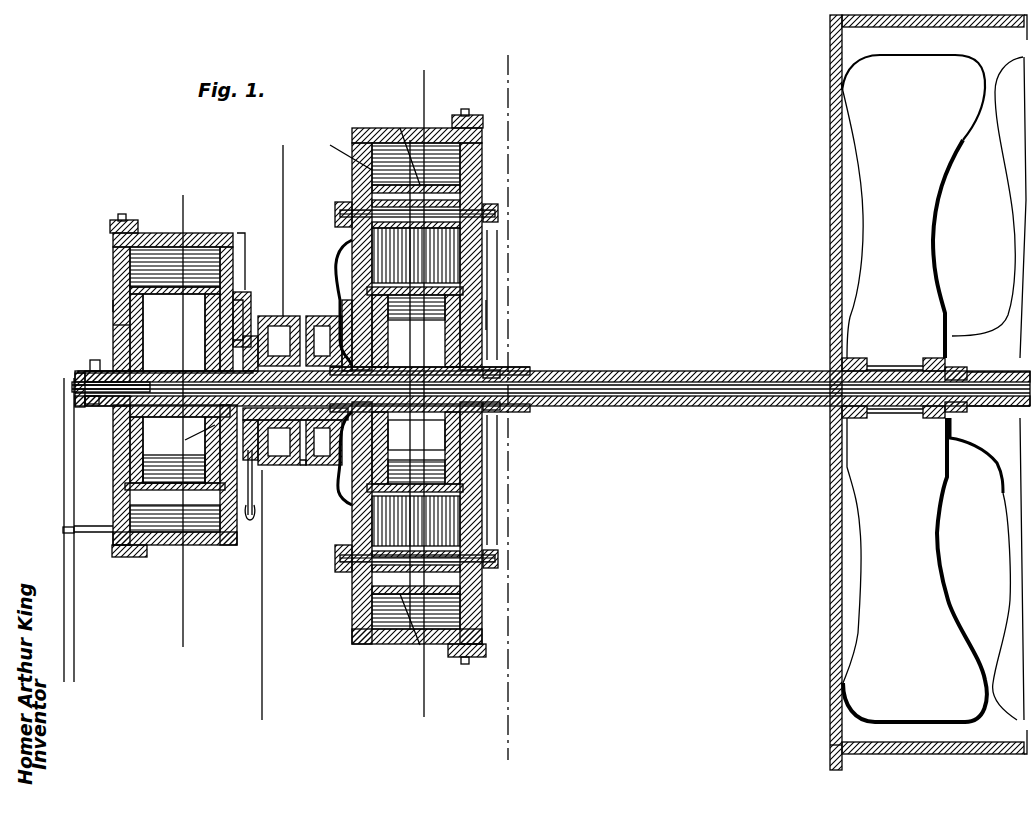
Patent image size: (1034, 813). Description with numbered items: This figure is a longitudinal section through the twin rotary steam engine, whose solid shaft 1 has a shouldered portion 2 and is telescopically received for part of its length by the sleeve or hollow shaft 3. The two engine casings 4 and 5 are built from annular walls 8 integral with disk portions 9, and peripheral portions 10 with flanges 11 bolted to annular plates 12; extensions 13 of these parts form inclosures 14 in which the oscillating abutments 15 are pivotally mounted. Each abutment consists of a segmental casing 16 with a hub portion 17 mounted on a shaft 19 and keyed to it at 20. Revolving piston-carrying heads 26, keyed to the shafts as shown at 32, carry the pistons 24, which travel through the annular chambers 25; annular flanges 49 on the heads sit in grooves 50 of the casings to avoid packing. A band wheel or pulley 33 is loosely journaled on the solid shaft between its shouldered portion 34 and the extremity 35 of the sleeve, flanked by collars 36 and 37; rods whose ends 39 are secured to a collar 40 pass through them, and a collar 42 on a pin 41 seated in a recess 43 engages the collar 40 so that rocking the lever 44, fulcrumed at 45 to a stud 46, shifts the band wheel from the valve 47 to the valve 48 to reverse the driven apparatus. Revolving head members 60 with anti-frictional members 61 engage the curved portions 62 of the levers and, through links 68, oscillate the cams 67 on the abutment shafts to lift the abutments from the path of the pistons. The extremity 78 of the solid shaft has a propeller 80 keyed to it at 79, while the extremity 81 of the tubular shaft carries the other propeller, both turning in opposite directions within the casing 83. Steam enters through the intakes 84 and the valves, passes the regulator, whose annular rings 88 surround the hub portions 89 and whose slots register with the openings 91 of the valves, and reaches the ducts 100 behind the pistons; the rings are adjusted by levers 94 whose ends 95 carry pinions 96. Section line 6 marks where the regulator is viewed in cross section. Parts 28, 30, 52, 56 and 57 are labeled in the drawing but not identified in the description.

The solid shaft 1 is at (566, 410).
The shouldered portion 2 is at (186, 423).
The sleeve or hollow shaft 3 is at (724, 408).
The casing of the engine 4 is at (507, 407).
The casing of the engine 5 is at (419, 403).
The section line 6— 6 is at (222, 546).
The annular walls 8 is at (420, 646).
The disk portions 9 is at (248, 250).
The peripheral portions 10 is at (128, 222).
The flanges 11 is at (118, 218).
The annular plates 12 is at (113, 268).
The extensions 13 is at (483, 148).
The casings or inclosures 14 is at (483, 160).
The oscillating abutments 15 is at (417, 255).
The segmental shaped casings 16 is at (528, 252).
The hub portion 17 is at (400, 128).
The shafts 19 is at (340, 202).
The key 20 is at (416, 611).
The pistons 24 is at (418, 521).
The chambers 25 is at (585, 262).
The piston-carrying heads 26 is at (205, 240).
The rotor winding 28 is at (174, 461).
The rotor core 30 is at (424, 452).
The key 32 is at (500, 355).
The band wheel or pulley 33 is at (258, 336).
The shouldered portion 34 is at (258, 450).
The extremity of the sleeve 35 is at (302, 466).
The collar 36 is at (342, 315).
The collar 37 is at (305, 450).
The ends of the rods 39 is at (72, 388).
The collar 40 is at (85, 372).
The pin 41 is at (85, 402).
The collar 42 is at (92, 362).
The recess 43 is at (75, 386).
The lever 44 is at (64, 495).
The fulcrum 45 is at (63, 532).
The stud 46 is at (92, 526).
The valve 47 is at (416, 331).
The valve 48 is at (245, 292).
The annular flanges 49 is at (113, 296).
The annular recesses or grooves 50 is at (113, 322).
The rotor core 52 is at (180, 444).
The rotor 56 is at (175, 332).
The rotor bar 57 is at (200, 450).
The revolving head members 60 is at (551, 458).
The anti-frictional members 61 is at (498, 300).
The curved portions of the levers 62 is at (922, 182).
The cams 67 is at (498, 210).
The links 68 is at (498, 228).
The extremity of the solid shaft 78 is at (988, 390).
The key 79 is at (945, 412).
The propeller 80 is at (1013, 247).
The extremity of the tubular shaft 81 is at (900, 357).
The casing 83 is at (830, 742).
The ports or intakes 84 is at (416, 412).
The annular rings 88 is at (270, 316).
The hub portions 89 is at (490, 330).
The openings of the valves 91 is at (320, 316).
The levers 94 is at (254, 515).
The ends of the levers 95 is at (258, 515).
The pinions or gears 96 is at (175, 507).
The ducts 100 is at (345, 275).